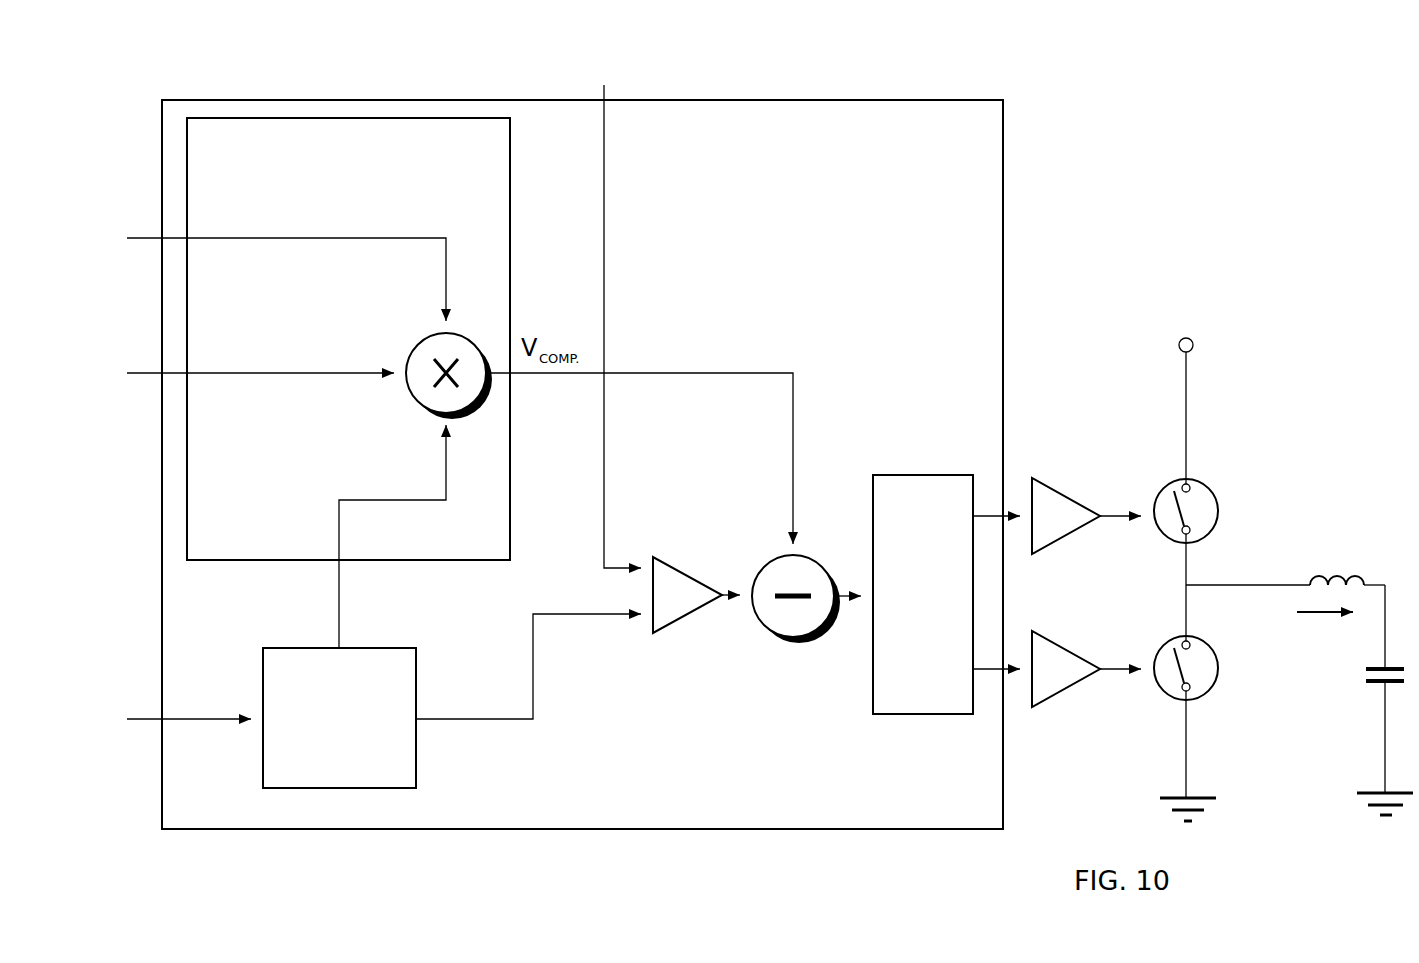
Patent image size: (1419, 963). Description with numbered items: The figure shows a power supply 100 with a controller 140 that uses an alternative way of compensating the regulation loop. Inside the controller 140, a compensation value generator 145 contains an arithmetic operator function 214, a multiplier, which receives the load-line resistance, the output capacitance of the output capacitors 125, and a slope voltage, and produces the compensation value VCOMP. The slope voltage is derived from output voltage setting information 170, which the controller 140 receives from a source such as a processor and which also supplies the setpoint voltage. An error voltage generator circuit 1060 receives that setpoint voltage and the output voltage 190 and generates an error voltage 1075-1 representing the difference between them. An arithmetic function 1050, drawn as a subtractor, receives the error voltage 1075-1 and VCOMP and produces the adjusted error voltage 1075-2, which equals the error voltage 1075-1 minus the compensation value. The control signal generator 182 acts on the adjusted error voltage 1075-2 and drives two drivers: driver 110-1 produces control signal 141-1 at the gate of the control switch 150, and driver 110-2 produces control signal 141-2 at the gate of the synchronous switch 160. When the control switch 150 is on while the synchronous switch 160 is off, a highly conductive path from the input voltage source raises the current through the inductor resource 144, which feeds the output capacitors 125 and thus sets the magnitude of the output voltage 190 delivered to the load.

The power supply 100 is at (1161, 149).
The controller 140 is at (848, 191).
The compensation value generator 145 is at (316, 192).
The arithmetic operator function 214 is at (475, 333).
The output voltage 190 is at (990, 298).
The output voltage setting information 170 is at (324, 774).
The error voltage generator circuit 1060 is at (692, 605).
The arithmetic function 1050 is at (768, 553).
The error voltage 1075-1 is at (728, 600).
The adjusted error voltage 1075-2 is at (853, 580).
The control signal generator 182 is at (908, 639).
The driver 110-1 is at (1065, 490).
The control signal 141-1 is at (1114, 524).
The driver 110-2 is at (1065, 705).
The control signal 141-2 is at (1124, 680).
The control switch 150 is at (1222, 512).
The synchronous switch 160 is at (1222, 668).
The inductor resource 144 is at (1275, 594).
The output capacitors 125 is at (1362, 672).